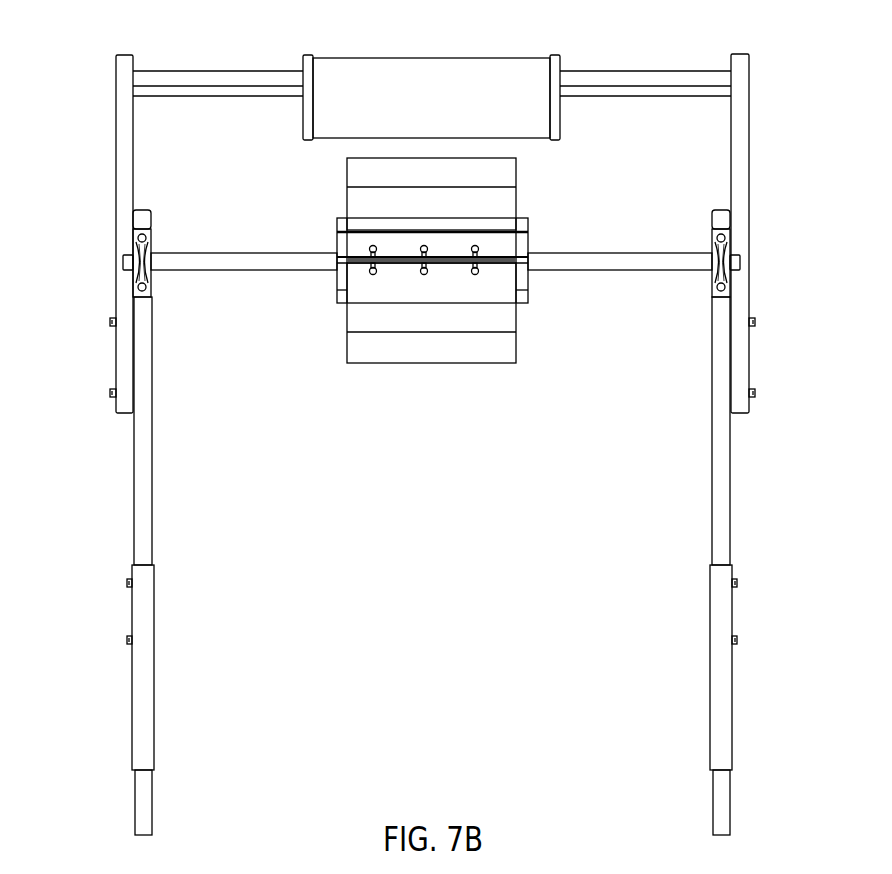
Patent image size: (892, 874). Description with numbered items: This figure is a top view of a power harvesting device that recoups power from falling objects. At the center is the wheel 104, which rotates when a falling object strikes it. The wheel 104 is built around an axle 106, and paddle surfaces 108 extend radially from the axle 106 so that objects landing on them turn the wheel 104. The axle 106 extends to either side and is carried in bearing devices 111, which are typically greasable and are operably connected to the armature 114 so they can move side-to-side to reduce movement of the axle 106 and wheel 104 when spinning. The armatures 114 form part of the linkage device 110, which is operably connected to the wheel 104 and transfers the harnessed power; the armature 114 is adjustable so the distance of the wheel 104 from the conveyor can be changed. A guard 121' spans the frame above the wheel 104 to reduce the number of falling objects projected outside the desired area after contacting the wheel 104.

The wheel 104 is at (526, 192).
The axle 106 is at (188, 272).
The paddle surface 108 is at (357, 207).
The linkage device 110 is at (736, 437).
The bearing device 111 is at (136, 250).
The armature 114 is at (152, 478).
The guard 121' is at (441, 77).